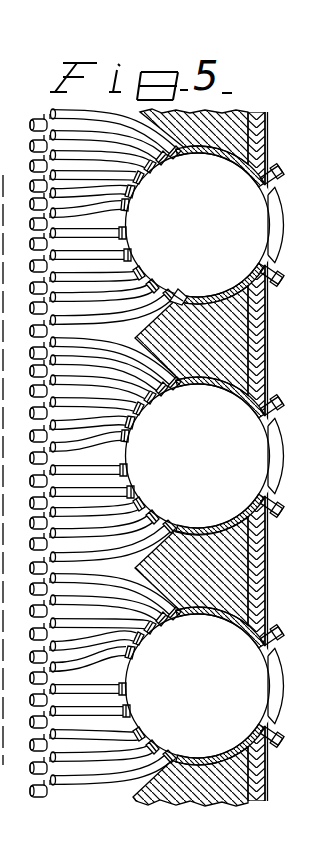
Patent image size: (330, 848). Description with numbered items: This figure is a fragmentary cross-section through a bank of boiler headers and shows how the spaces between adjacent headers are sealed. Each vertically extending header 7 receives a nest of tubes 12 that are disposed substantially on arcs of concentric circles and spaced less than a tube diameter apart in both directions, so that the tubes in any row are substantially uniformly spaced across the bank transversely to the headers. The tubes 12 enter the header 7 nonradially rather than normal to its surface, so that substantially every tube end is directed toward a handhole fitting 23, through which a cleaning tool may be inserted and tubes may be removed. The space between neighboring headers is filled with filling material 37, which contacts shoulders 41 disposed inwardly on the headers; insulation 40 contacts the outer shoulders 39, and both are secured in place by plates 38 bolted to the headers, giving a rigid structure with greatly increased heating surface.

The tubes 12 is at (55, 133).
The vertically extending header 7 is at (247, 205).
The handhole fittings 23 is at (279, 224).
The shoulders 41 is at (182, 296).
The shoulders 39 is at (259, 278).
The plates 38 is at (264, 304).
The filling material 37 is at (238, 338).
The insulation 40 is at (253, 358).